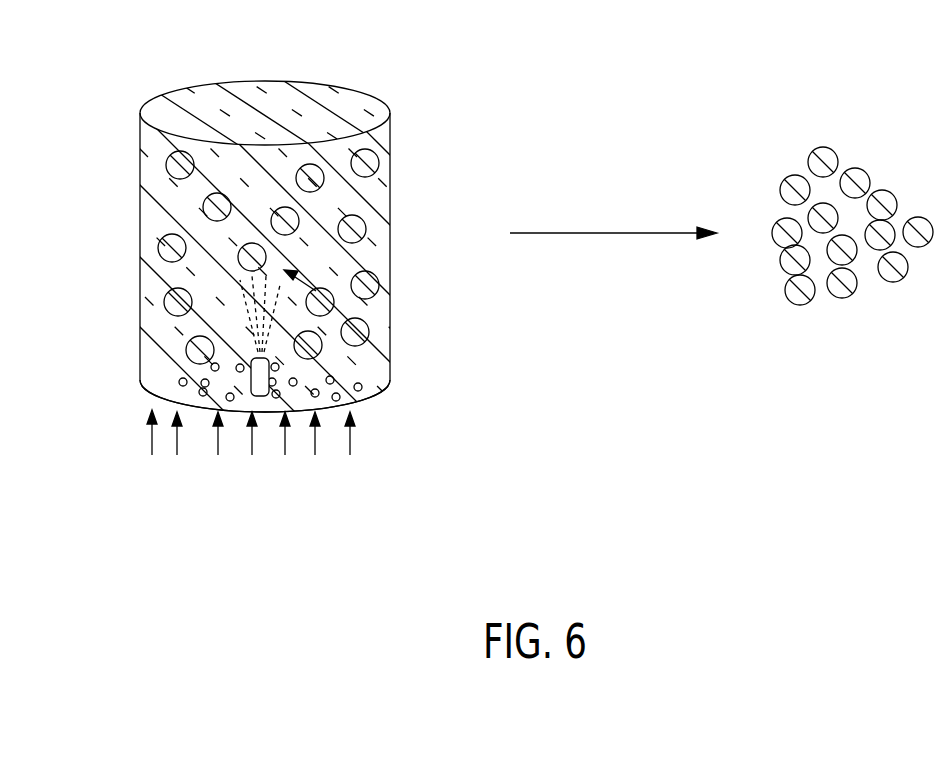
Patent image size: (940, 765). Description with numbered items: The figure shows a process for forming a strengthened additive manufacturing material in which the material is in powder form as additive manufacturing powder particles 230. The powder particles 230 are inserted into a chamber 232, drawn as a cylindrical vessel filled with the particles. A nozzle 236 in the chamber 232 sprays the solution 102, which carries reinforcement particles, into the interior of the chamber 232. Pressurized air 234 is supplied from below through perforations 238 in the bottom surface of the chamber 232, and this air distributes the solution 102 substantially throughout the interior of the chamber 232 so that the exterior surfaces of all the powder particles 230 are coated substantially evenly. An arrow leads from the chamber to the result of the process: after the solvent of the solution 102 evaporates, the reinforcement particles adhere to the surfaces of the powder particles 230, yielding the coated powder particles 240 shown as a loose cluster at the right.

The additive manufacturing powder particles 230 is at (380, 228).
The chamber 232 is at (170, 100).
The solution 102 is at (388, 322).
The nozzle 236 is at (236, 382).
The perforations 238 is at (375, 388).
The pressurized air 234 is at (333, 508).
The coated powder particles 240 is at (781, 128).